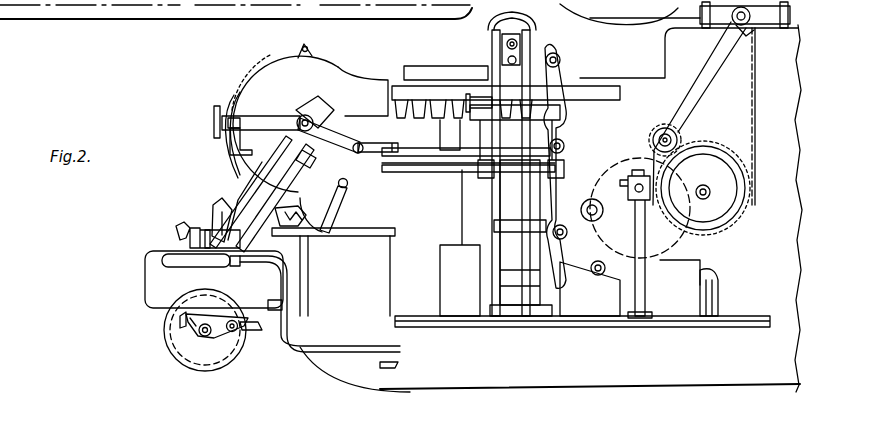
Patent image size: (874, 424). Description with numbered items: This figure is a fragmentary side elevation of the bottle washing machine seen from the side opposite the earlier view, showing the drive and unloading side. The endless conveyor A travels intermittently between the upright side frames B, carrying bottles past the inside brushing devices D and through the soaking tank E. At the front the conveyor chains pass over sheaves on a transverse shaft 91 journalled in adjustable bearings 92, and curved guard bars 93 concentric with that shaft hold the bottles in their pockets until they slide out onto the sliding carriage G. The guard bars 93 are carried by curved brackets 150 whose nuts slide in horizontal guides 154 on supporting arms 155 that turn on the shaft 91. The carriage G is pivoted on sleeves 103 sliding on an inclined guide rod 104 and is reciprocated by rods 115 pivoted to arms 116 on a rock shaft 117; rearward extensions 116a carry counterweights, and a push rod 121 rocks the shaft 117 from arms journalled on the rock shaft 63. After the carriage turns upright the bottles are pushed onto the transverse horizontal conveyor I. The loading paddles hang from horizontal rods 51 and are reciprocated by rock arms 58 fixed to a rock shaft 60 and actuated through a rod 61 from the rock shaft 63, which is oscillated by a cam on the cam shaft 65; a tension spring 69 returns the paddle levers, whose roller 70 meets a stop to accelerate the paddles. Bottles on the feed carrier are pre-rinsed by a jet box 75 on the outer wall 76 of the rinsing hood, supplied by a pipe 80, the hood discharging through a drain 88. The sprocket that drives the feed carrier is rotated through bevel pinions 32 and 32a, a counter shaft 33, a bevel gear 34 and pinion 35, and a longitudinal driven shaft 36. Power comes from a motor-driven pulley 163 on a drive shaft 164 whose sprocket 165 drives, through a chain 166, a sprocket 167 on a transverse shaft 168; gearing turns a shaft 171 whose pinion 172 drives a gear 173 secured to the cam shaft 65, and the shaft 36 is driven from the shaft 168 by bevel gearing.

The endless conveyor A is at (430, 98).
The side frames B is at (310, 118).
The inside brushing devices D is at (500, 216).
The soaking tank E is at (590, 352).
The sliding carriage G is at (222, 196).
The horizontal conveyor I is at (196, 222).
The bevel pinion 32 is at (184, 318).
The bevel pinion 32a is at (190, 326).
The transverse counter shaft 33 is at (217, 339).
The bevel gear 34 is at (222, 360).
The pinion 35 is at (248, 334).
The longitudinal driven shaft 36 is at (325, 340).
The horizontal rod 51 is at (278, 236).
The rock arm 58 is at (336, 205).
The rock shaft 60 is at (382, 178).
The rod or link 61 is at (434, 178).
The rock shaft 63 is at (598, 196).
The cam shaft 65 is at (635, 210).
The tension spring 69 is at (312, 210).
The roller 70 is at (284, 222).
The jet box 75 is at (200, 276).
The outer upright side wall 76 is at (214, 279).
The pipe 80 is at (384, 354).
The drain 88 is at (268, 305).
The transverse shaft 91 is at (314, 118).
The bearings 92 is at (312, 104).
The guard members 93 is at (236, 92).
The sleeves 103 is at (256, 186).
The guide rod 104 is at (306, 158).
The links or rods 115 is at (272, 165).
The forwardly extending arms 116 is at (340, 134).
The rearward extensions 116a is at (450, 114).
The transverse rock shaft 117 is at (374, 142).
The push rod 121 is at (450, 160).
The curved stiffening arms 150 is at (228, 140).
The horizontal guides 154 is at (258, 78).
The supporting arms 155 is at (258, 116).
The pulley 163 is at (790, 12).
The transverse drive shaft 164 is at (738, 34).
The sprocket 165 is at (756, 44).
The chain 166 is at (758, 88).
The sprocket 167 is at (734, 184).
The transverse shaft 168 is at (712, 196).
The transverse shaft 171 is at (665, 134).
The pinion 172 is at (654, 132).
The gear 173 is at (676, 174).